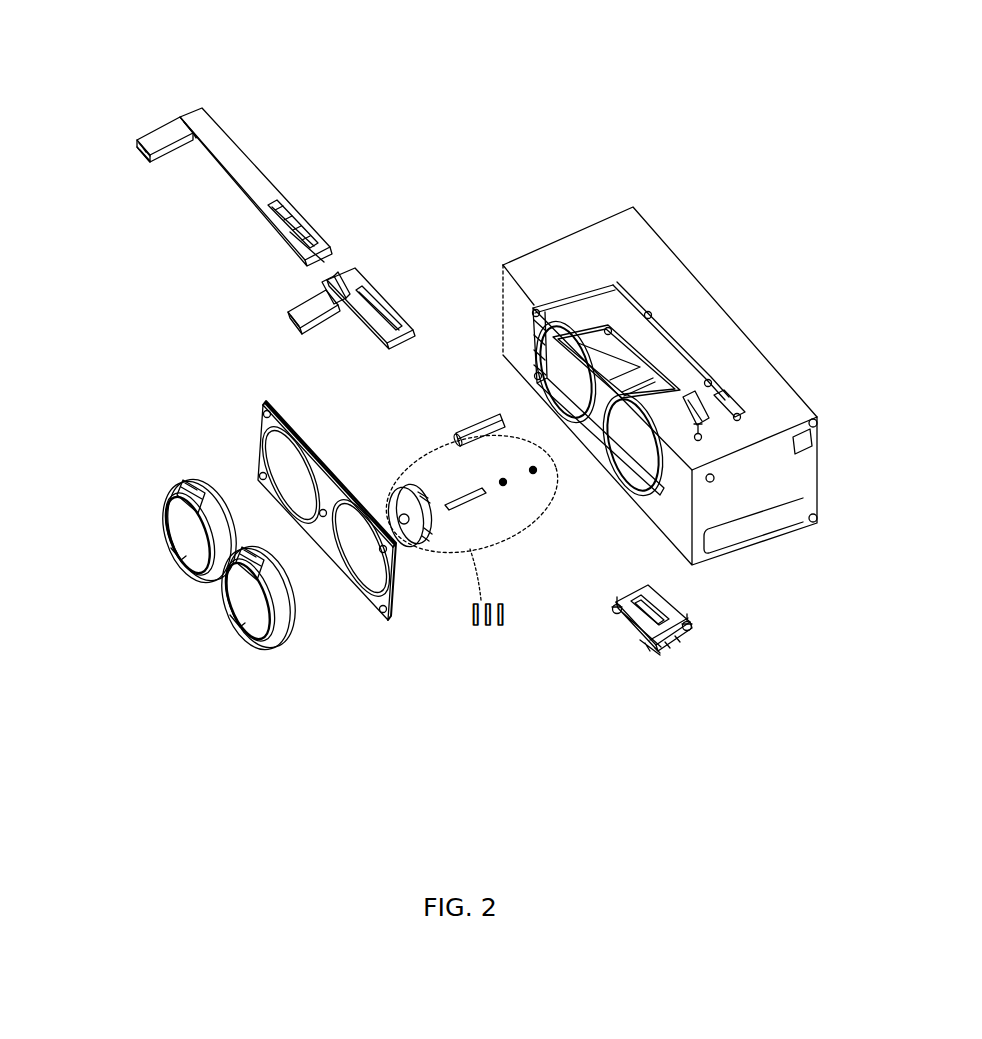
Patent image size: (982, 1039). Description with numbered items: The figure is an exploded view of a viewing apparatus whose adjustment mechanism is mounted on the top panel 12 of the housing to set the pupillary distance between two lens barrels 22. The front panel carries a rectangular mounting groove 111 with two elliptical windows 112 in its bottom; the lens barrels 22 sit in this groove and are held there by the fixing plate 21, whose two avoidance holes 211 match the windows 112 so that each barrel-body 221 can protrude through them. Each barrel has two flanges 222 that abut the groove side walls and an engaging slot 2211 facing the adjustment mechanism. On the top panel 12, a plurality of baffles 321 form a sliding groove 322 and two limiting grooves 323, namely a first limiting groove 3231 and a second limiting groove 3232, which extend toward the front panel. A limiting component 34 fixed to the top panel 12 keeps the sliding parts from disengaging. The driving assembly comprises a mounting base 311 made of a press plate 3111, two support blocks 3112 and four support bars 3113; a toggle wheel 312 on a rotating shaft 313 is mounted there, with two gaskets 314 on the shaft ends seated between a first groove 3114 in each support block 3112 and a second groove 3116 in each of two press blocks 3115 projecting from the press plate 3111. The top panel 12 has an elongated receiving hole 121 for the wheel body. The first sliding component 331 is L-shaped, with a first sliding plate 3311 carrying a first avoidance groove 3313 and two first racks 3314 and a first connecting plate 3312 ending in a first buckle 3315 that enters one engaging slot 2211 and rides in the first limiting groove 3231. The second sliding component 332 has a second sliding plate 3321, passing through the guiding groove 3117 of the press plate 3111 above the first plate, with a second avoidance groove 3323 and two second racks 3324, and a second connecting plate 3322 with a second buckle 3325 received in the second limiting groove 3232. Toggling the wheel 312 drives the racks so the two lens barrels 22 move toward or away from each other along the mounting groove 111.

The first sliding component 331 is at (95, 63).
The first sliding plate 3311 is at (210, 119).
The first connecting plate 3312 is at (165, 128).
The first avoidance groove 3313 is at (313, 229).
The first racks 3314 is at (303, 225).
The first buckle 3315 is at (140, 164).
The second sliding component 332 is at (190, 256).
The second sliding plate 3321 is at (328, 289).
The second connecting plate 3322 is at (309, 318).
The second avoidance groove 3323 is at (401, 316).
The second racks 3324 is at (346, 320).
The second buckle 3325 is at (291, 326).
The fixing plate 21 is at (262, 419).
The avoidance holes 211 is at (272, 463).
The lens barrels 22 is at (313, 722).
The barrel-body 221 is at (283, 654).
The flanges 222 is at (262, 661).
The engaging slot 2211 is at (271, 574).
The limiting component 34 is at (477, 424).
The toggle wheel 312 is at (413, 534).
The rotating shaft 313 is at (481, 498).
The gaskets 314 is at (536, 473).
The top panel 12 is at (701, 308).
The mounting groove 111 is at (633, 501).
The windows 112 is at (640, 438).
The receiving hole 121 is at (733, 458).
The baffles 321 is at (628, 324).
The sliding groove 322 is at (656, 319).
The limiting grooves 323 is at (637, 170).
The first limiting groove 3231 is at (577, 322).
The second limiting groove 3232 is at (598, 330).
The mounting base 311 is at (800, 290).
The press plate 3111 is at (680, 626).
The support blocks 3112 is at (746, 405).
The support bars 3113 is at (743, 417).
The first groove 3114 is at (725, 400).
The press blocks 3115 is at (615, 608).
The second groove 3116 is at (637, 629).
The guiding groove 3117 is at (674, 638).